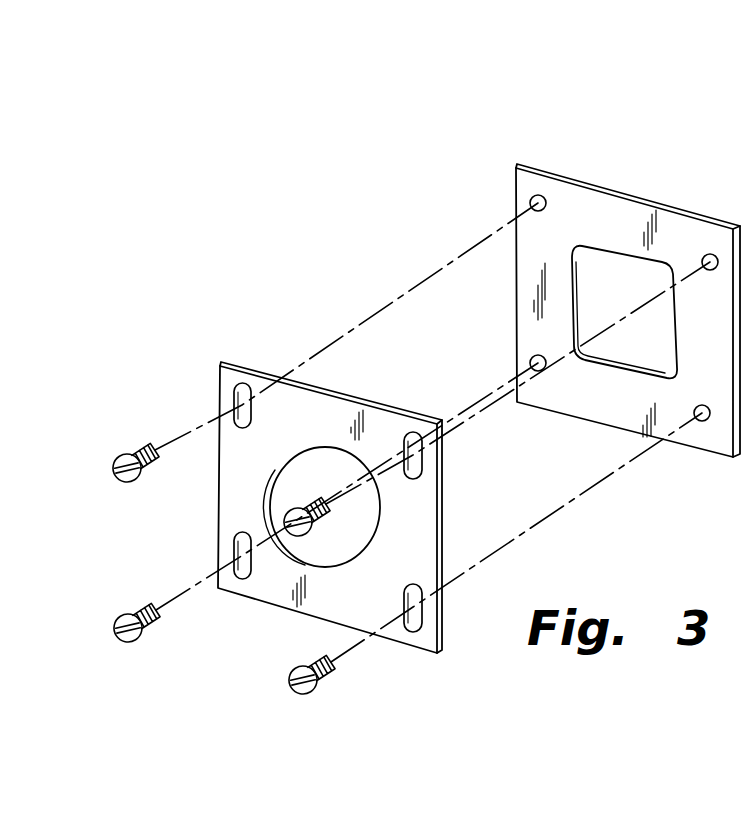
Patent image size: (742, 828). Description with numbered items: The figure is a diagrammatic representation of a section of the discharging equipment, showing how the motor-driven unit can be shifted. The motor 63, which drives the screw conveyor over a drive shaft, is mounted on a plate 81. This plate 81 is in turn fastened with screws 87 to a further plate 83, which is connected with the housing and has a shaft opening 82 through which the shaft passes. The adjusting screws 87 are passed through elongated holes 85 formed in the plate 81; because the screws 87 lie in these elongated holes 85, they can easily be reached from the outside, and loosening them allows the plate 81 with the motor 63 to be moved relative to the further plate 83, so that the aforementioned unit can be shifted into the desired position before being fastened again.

The plate 81 is at (264, 340).
The further plate 83 is at (547, 142).
The shaft opening 82 is at (618, 283).
The elongated holes 85 is at (235, 407).
The adjusting screws 87 is at (132, 452).
The motor 63 is at (332, 540).